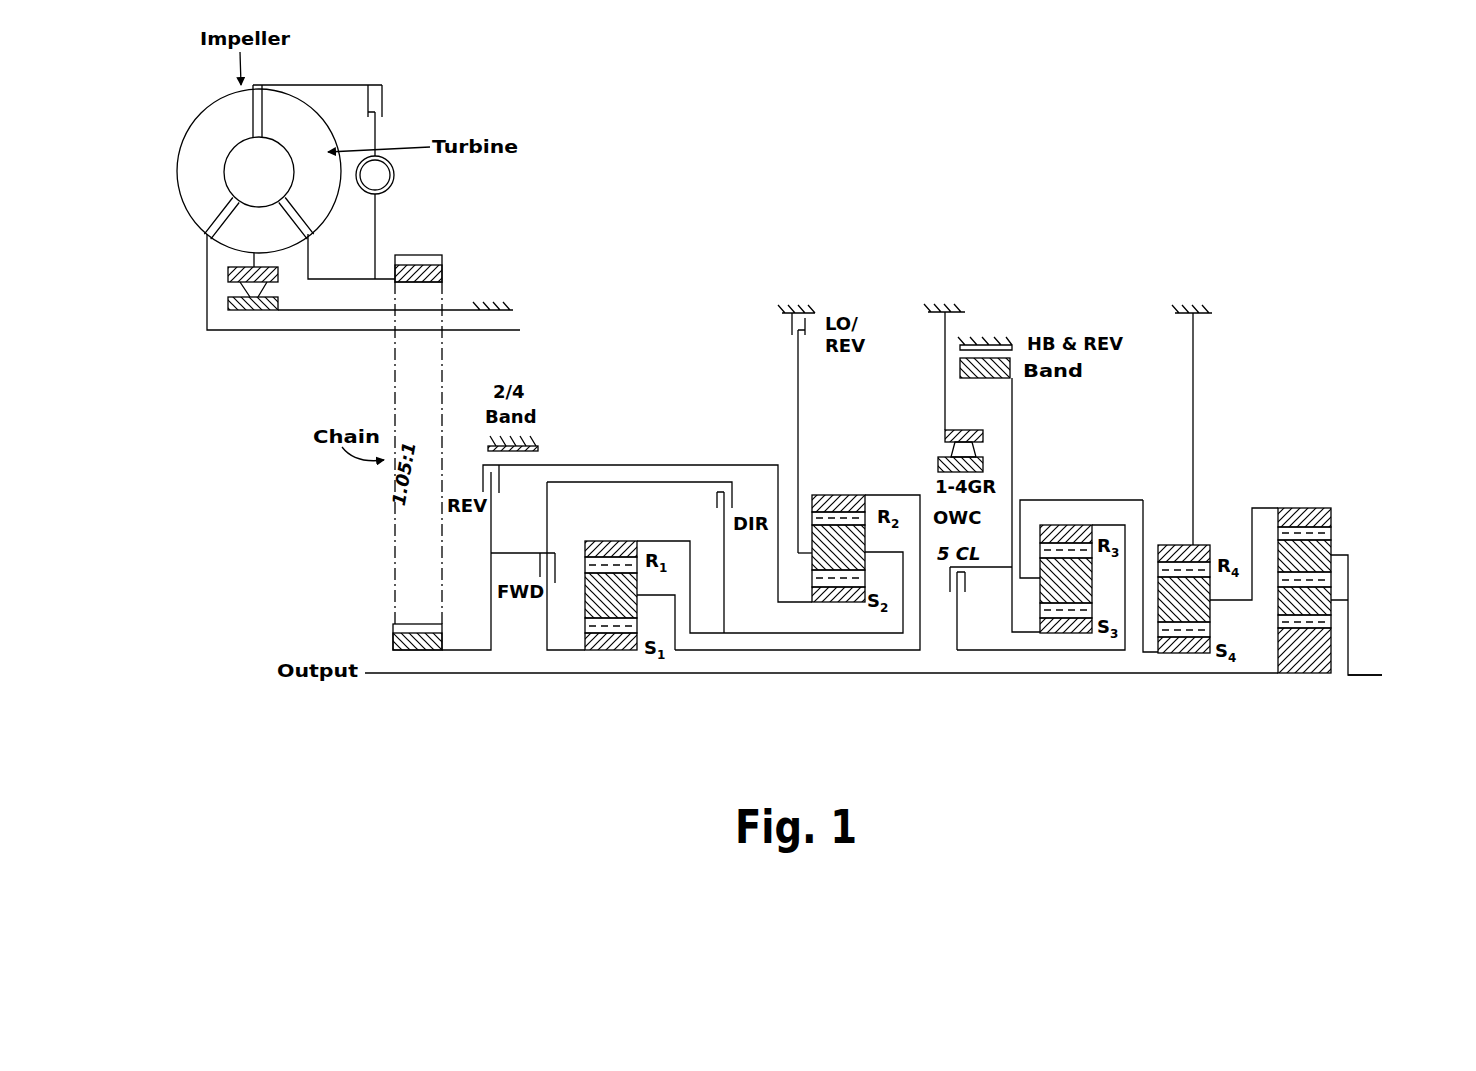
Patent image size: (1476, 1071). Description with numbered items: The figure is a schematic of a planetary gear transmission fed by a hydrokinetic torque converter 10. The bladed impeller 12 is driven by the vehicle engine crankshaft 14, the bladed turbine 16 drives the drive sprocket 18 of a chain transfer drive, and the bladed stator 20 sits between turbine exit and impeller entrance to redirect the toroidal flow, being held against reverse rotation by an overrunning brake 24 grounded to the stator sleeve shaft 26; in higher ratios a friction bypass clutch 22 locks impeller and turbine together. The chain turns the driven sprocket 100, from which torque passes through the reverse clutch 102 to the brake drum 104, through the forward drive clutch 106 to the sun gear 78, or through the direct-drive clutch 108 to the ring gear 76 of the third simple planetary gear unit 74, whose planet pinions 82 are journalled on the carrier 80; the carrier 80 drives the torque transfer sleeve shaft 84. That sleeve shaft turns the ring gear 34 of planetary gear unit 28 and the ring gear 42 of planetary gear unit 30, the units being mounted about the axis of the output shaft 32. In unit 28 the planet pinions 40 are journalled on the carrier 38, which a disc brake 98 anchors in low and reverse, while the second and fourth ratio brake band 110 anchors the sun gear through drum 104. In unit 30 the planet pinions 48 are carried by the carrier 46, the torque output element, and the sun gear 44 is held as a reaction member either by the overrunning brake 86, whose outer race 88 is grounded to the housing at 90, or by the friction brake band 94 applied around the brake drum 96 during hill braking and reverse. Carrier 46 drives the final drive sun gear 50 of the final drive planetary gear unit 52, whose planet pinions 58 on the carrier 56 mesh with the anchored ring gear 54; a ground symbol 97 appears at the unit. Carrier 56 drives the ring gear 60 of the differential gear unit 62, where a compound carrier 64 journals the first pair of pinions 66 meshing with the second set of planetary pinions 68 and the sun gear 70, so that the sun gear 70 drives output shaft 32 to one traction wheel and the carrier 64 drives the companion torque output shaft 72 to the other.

The hydrokinetic torque converter 10 is at (205, 106).
The bladed impeller 12 is at (204, 195).
The bladed turbine 16 is at (318, 195).
The bladed stator 20 is at (264, 235).
The friction bypass clutch 22 is at (380, 98).
The drive sprocket 18 is at (418, 256).
The overrunning brake 24 is at (254, 288).
The stator sleeve shaft 26 is at (468, 308).
The vehicle engine crankshaft 14 is at (467, 334).
The driven sprocket 100 is at (407, 623).
The second and fourth ratio brake band 110 is at (548, 436).
The brake drum 104 is at (660, 463).
The reverse clutch 102 is at (523, 544).
The forward drive clutch 106 is at (556, 568).
The direct-drive clutch 108 is at (717, 492).
The third simple planetary gear unit 74 is at (612, 539).
The ring gear 76 is at (628, 547).
The planet pinions 82 is at (612, 598).
The sun gear 78 is at (609, 651).
The carrier 80 is at (665, 594).
The torque transfer sleeve shaft 84 is at (680, 650).
The output shaft 32 is at (530, 674).
The disc brake 98 is at (790, 326).
The carrier 38 is at (797, 380).
The planet pinions 40 is at (805, 554).
The ring gear 34 is at (823, 497).
The simple planetary gear unit 28 is at (858, 490).
The transmission housing ground 90 is at (965, 313).
The outer race 88 is at (945, 430).
The overrunning brake 86 is at (985, 452).
The friction brake band 94 is at (1002, 336).
The brake drum 96 is at (985, 379).
The carrier 46 is at (1020, 500).
The planet pinions 48 is at (1143, 503).
The ring gear 42 is at (1085, 525).
The simple planetary gear unit 30 is at (1063, 522).
The sun gear 44 is at (1057, 636).
The ground 97 is at (1196, 340).
The final drive planetary gear unit 52 is at (1198, 542).
The ring gear 54 is at (1210, 548).
The planet pinions 58 is at (1178, 610).
The final drive sun gear 50 is at (1196, 655).
The carrier 56 is at (1226, 601).
The ring gear 60 is at (1303, 509).
The differential gear unit 62 is at (1335, 529).
The second set of planetary pinions 68 is at (1336, 547).
The first pair of pinions 66 is at (1288, 601).
The sun gear 70 is at (1298, 665).
The compound carrier 64 is at (1350, 563).
The companion torque output shaft 72 is at (1372, 673).